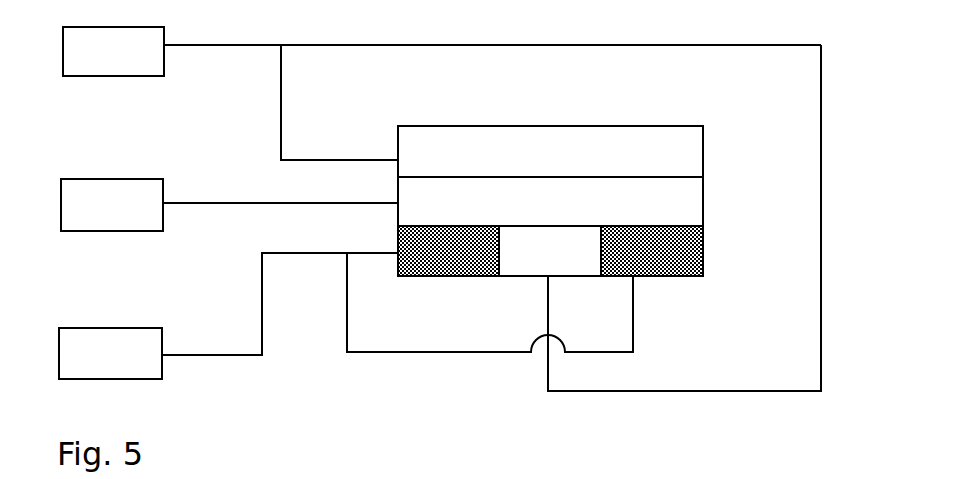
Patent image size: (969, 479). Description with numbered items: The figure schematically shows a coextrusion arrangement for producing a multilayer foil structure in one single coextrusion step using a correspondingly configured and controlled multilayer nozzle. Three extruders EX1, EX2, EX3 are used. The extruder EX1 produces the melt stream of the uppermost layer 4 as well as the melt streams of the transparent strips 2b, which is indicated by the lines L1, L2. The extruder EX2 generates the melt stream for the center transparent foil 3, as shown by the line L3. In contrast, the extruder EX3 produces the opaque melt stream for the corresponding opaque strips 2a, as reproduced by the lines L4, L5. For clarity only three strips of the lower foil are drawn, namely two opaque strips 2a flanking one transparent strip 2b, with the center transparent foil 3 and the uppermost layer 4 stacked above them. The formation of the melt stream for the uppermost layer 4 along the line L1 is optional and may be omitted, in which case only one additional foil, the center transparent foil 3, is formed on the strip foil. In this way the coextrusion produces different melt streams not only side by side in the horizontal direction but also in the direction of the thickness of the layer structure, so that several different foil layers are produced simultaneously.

The extruder EX1 is at (113, 51).
The extruder EX2 is at (112, 205).
The extruder EX3 is at (110, 353).
The line L1 is at (281, 104).
The line L2 is at (821, 152).
The line L3 is at (202, 203).
The line L4 is at (197, 355).
The line L5 is at (413, 352).
The uppermost layer 4 is at (703, 152).
The center transparent foil 3 is at (703, 199).
The opaque strips 2a is at (693, 293).
The transparent strips 2b is at (512, 276).